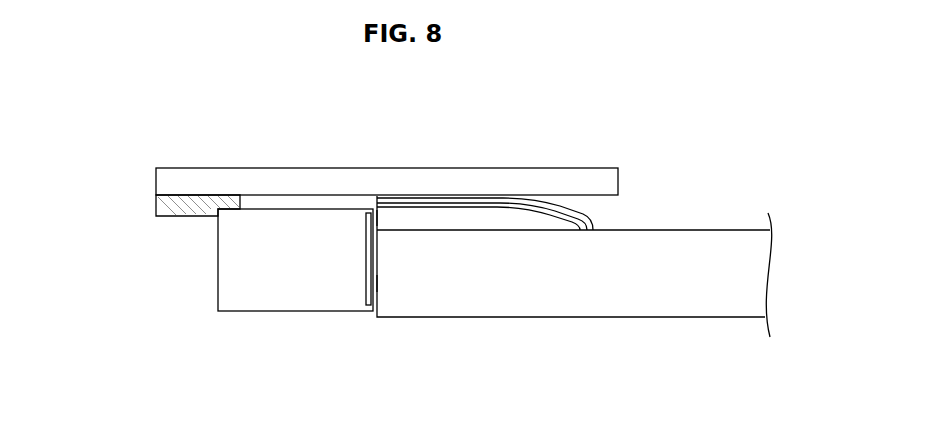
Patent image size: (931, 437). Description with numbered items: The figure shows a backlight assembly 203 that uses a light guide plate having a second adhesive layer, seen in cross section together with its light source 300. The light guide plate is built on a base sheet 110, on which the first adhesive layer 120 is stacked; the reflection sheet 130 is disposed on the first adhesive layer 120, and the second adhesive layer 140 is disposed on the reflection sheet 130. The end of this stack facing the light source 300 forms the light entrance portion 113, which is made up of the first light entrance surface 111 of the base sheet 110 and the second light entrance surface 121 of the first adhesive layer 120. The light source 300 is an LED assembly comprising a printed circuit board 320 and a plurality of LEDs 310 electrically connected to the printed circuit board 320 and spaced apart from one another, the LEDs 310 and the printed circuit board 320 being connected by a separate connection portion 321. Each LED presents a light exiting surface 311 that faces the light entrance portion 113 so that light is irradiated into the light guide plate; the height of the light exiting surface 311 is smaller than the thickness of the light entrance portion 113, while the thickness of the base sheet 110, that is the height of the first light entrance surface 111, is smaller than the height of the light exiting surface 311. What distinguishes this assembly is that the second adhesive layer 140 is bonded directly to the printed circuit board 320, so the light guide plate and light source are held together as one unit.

The backlight assembly 203 is at (108, 110).
The light source 300 is at (83, 190).
The LEDs 310 is at (230, 255).
The light exiting surface 311 is at (368, 277).
The printed circuit board 320 is at (167, 190).
The connection portion 321 is at (195, 210).
The base sheet 110 is at (687, 243).
The first light entrance surface 111 is at (377, 283).
The light entrance portion 113 is at (497, 384).
The first adhesive layer 120 is at (538, 227).
The second light entrance surface 121 is at (377, 218).
The reflection sheet 130 is at (495, 197).
The second adhesive layer 140 is at (450, 200).